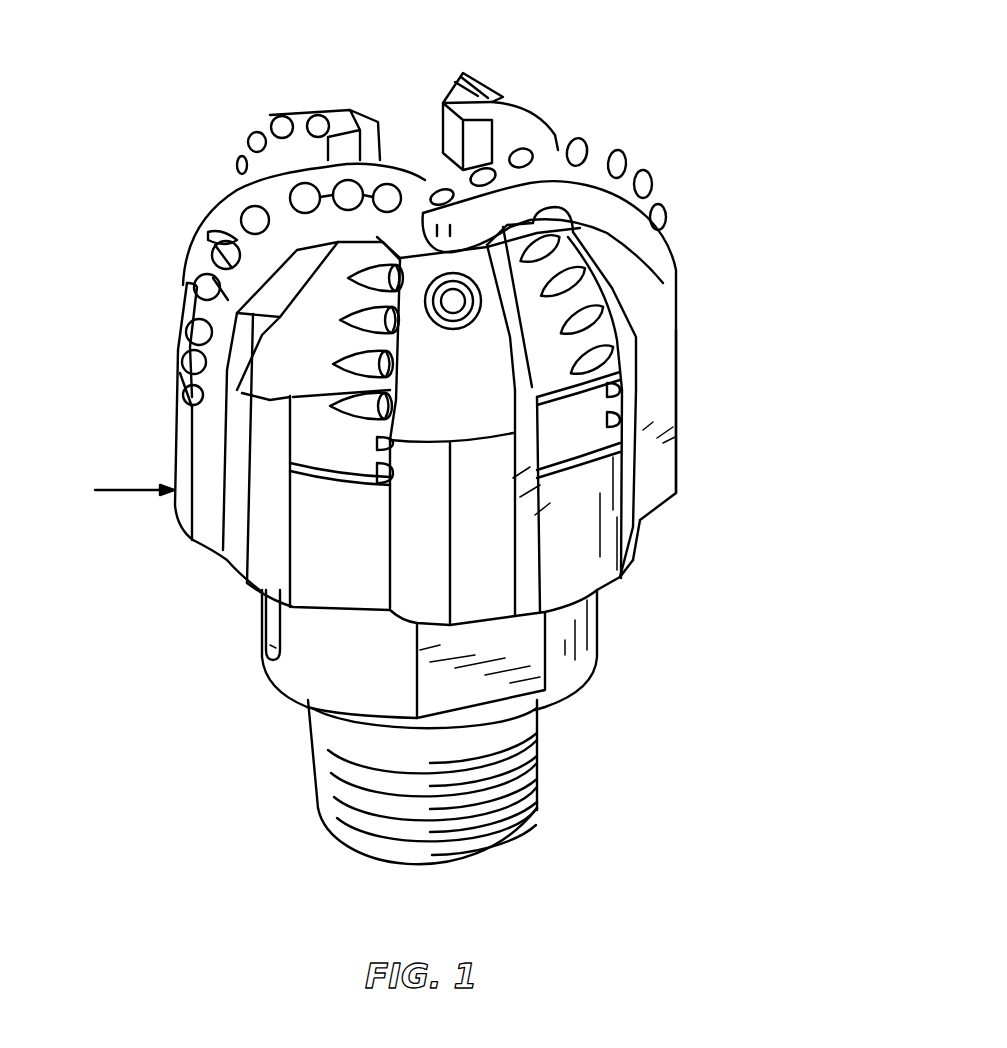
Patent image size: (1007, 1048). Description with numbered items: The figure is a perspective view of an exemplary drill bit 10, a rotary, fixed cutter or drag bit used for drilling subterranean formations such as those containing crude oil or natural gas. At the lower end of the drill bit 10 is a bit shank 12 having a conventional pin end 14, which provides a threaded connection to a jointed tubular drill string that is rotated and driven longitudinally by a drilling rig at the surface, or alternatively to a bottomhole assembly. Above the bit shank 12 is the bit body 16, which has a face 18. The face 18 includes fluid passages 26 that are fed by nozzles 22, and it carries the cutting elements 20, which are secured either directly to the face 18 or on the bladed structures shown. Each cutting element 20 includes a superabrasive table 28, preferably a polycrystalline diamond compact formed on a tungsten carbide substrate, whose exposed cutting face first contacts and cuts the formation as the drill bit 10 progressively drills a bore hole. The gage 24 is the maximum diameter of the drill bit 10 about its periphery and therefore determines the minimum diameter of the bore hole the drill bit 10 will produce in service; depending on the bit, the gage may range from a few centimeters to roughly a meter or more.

The drill bit 10 is at (674, 116).
The bit shank 12 is at (573, 667).
The pin end 14 is at (537, 777).
The bit body 16 is at (677, 377).
The face 18 is at (235, 314).
The cutting elements 20 is at (310, 185).
The nozzles 22 is at (453, 301).
The gage 24 is at (677, 477).
The fluid passages 26 is at (453, 365).
The superabrasive table 28 is at (213, 257).